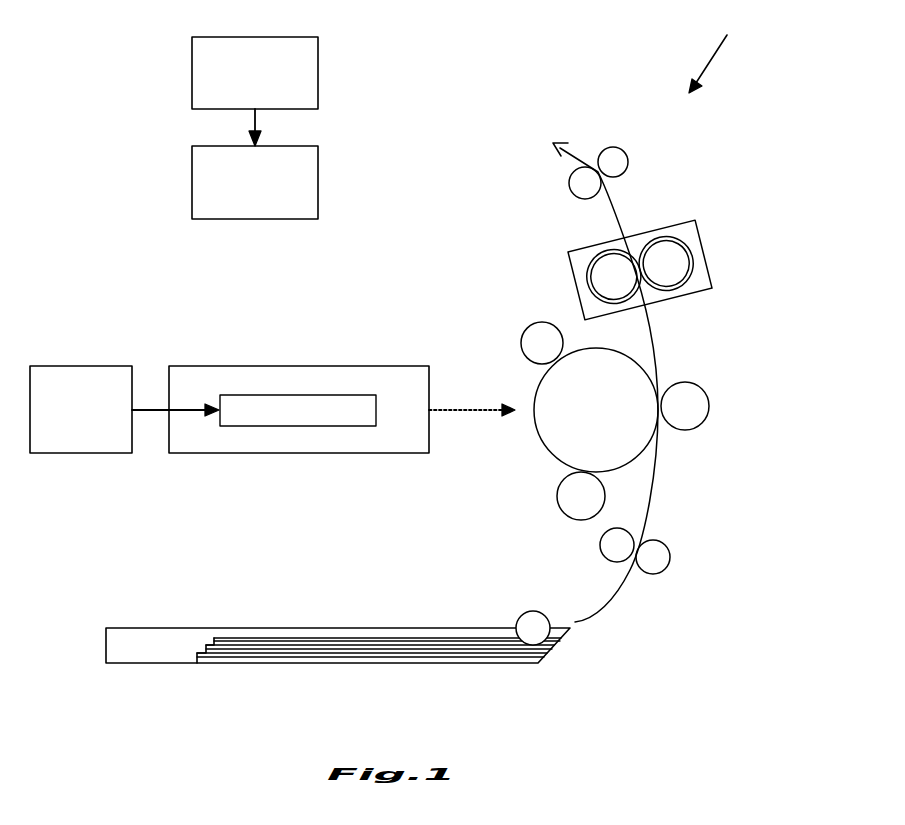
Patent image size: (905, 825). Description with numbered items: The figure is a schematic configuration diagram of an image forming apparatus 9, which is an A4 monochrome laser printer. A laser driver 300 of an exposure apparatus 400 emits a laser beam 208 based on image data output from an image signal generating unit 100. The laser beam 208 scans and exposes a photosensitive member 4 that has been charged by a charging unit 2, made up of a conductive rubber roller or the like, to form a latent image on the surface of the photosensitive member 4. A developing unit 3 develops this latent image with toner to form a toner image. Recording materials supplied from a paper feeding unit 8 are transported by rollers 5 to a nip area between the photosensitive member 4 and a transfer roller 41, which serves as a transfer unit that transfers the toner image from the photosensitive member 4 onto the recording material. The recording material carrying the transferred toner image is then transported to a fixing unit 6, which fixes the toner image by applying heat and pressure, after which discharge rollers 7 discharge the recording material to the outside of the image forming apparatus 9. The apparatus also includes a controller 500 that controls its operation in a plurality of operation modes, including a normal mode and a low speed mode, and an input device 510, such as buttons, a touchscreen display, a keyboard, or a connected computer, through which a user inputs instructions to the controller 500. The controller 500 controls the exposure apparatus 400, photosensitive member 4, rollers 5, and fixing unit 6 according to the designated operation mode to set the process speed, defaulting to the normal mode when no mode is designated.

The image forming apparatus 9 is at (714, 54).
The discharge rollers 7 is at (618, 147).
The fixing unit 6 is at (689, 221).
The charging unit 2 is at (534, 322).
The transfer roller 41 is at (692, 382).
The photosensitive member 4 is at (545, 444).
The developing unit 3 is at (559, 504).
The rollers 5 is at (669, 547).
The paper feeding unit 8 is at (530, 611).
The input device 510 is at (318, 89).
The controller 500 is at (318, 192).
The image signal generating unit 100 is at (97, 366).
The exposure apparatus 400 is at (360, 366).
The laser driver 300 is at (262, 395).
The laser beam 208 is at (457, 410).